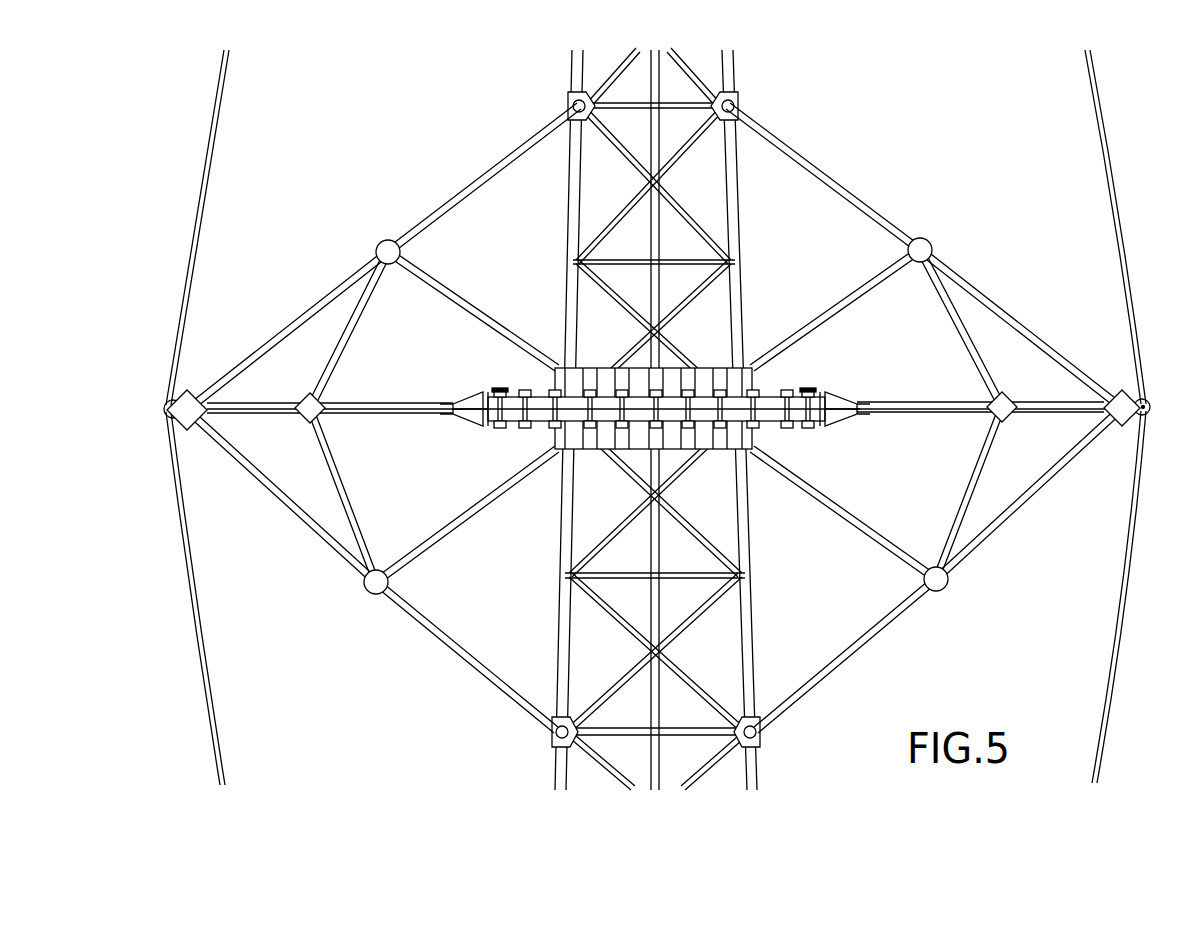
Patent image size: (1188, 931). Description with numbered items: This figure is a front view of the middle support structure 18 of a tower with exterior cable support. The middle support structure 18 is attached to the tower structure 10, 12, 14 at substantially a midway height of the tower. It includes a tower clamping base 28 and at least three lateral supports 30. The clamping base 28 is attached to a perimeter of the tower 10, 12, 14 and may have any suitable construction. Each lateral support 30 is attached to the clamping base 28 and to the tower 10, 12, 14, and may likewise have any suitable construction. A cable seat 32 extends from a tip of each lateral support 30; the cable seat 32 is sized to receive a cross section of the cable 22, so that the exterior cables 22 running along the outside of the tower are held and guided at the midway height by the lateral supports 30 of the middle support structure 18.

The tower structure 10 is at (939, 569).
The tower structure 12 is at (939, 569).
The tower structure 14 is at (782, 625).
The middle support structure 18 is at (912, 172).
The cable 22 is at (198, 203).
The tower clamping base 28 is at (762, 457).
The lateral support 30 is at (418, 228).
The cable seat 32 is at (166, 420).